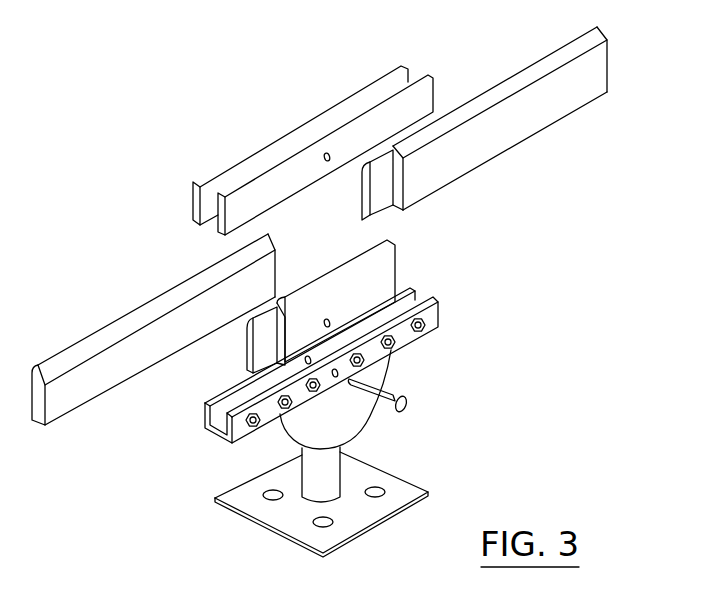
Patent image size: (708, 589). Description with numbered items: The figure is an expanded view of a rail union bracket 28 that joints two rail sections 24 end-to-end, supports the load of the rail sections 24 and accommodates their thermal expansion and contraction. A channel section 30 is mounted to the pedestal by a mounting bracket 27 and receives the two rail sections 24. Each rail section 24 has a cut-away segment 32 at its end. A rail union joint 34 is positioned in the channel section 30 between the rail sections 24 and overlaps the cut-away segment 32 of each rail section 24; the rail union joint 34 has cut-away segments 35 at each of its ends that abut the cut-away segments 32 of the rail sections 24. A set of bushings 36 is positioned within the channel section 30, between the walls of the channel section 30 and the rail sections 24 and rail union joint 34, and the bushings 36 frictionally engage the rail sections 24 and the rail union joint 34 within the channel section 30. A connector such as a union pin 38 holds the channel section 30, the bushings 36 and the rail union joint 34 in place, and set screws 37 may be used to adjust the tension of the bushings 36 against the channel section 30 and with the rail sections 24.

The rail section 24 is at (517, 145).
The mounting bracket 27 is at (377, 418).
The rail union bracket 28 is at (241, 98).
The channel section 30 is at (437, 313).
The cut-away segment 32 is at (378, 200).
The rail union joint 34 is at (398, 270).
The cut-away segment 35 is at (265, 345).
The bushing 36 is at (437, 92).
The set screw 37 is at (422, 332).
The union pin 38 is at (403, 398).